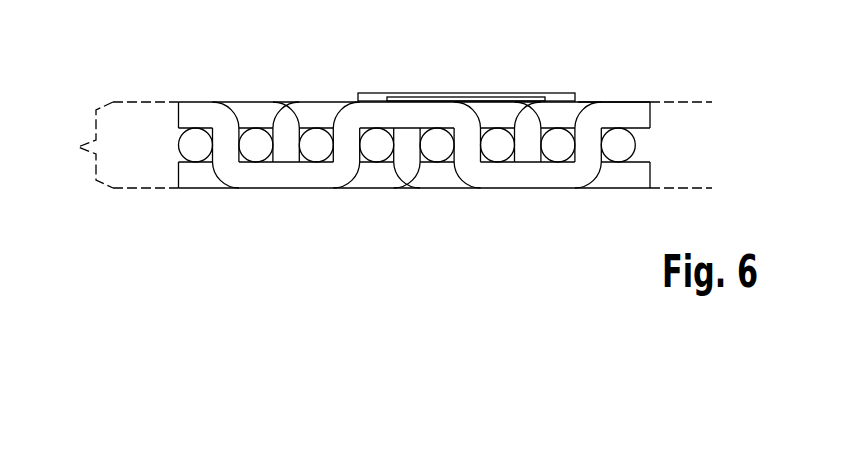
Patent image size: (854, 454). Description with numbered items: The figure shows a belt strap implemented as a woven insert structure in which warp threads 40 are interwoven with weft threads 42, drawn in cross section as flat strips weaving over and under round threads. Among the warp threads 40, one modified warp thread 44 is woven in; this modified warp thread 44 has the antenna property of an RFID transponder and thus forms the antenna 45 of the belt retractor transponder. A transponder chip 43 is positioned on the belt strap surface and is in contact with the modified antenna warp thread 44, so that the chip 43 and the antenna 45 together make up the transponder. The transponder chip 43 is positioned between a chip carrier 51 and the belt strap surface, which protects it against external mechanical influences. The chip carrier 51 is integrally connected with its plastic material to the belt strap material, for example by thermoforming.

The warp threads 40 is at (255, 108).
The weft threads 42 is at (253, 140).
The transponder chip 43 is at (415, 93).
The modified warp thread 44 is at (195, 108).
The antenna 45 is at (592, 92).
The chip carrier 51 is at (553, 96).